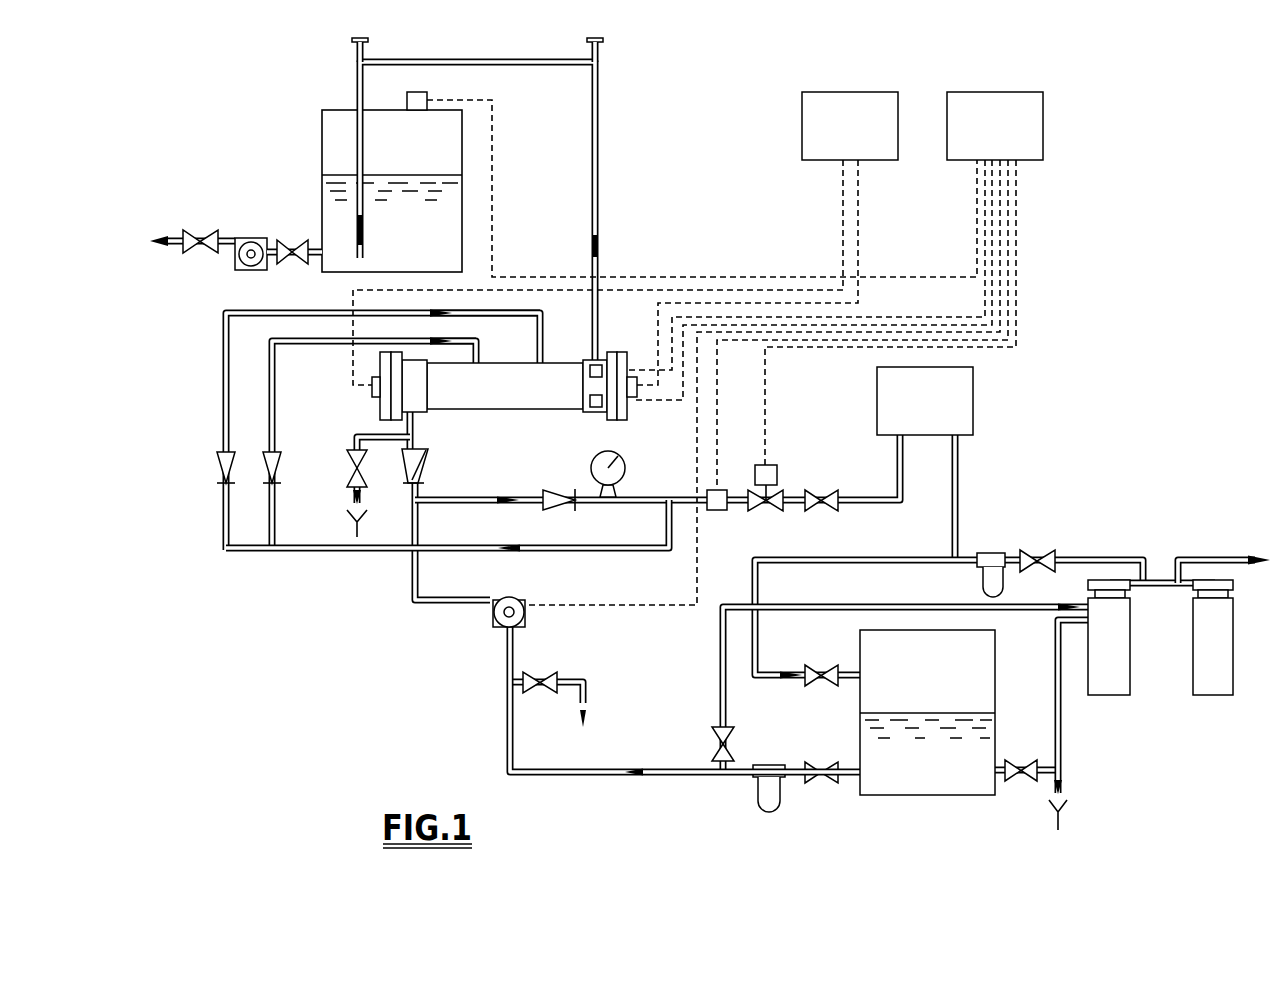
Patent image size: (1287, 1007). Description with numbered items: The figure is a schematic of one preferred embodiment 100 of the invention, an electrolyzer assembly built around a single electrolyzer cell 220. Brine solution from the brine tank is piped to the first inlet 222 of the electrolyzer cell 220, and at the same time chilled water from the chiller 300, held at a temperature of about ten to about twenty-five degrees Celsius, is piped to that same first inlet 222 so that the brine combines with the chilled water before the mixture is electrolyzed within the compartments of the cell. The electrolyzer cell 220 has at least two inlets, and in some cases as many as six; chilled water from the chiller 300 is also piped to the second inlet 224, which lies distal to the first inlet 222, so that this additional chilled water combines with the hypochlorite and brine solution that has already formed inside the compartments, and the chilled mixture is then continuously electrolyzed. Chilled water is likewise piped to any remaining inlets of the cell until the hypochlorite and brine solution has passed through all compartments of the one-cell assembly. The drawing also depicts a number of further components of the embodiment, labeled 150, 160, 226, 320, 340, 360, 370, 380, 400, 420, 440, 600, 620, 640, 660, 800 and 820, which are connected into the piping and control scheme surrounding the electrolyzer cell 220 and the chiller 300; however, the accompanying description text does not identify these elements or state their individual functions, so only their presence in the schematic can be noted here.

The preferred embodiment 100 is at (1108, 388).
The gas cylinders 150 is at (1212, 670).
The gas supply line 160 is at (1112, 558).
The electrolyzer cell 220 is at (485, 400).
The first inlet 222 is at (427, 487).
The second inlet 224 is at (478, 350).
The second inlet line 226 is at (547, 336).
The chiller 300 is at (962, 400).
The solenoid valve 320 is at (880, 498).
The check valve line 340 is at (483, 498).
The recirculation line 360 is at (587, 553).
The check valve line 370 is at (275, 425).
The check valve line 380 is at (230, 385).
The holding tank 400 is at (1003, 694).
The pump line 420 is at (540, 784).
The liquid in tank 440 is at (903, 790).
The reservoir 600 is at (396, 257).
The level sensor 620 is at (598, 153).
The drain valve 640 is at (316, 254).
The drain pump 660 is at (257, 238).
The controller 800 is at (975, 142).
The controller 820 is at (832, 142).